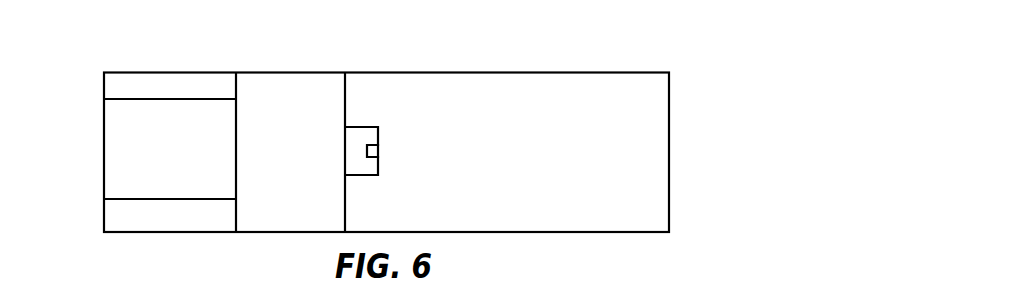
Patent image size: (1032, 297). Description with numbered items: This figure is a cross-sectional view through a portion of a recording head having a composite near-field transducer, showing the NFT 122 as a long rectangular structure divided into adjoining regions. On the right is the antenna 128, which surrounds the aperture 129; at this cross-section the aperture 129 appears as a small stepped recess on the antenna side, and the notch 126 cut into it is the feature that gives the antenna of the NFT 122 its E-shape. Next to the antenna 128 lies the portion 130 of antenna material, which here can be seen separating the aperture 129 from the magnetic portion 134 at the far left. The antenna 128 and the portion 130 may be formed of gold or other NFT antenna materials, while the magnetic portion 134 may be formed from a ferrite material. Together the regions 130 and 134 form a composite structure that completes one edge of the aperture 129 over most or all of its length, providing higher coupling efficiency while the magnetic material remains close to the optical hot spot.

The NFT 122 is at (627, 53).
The magnetic portion 134 is at (117, 156).
The antenna material portion 130 is at (314, 159).
The antenna 128 is at (548, 164).
The aperture 129 is at (361, 163).
The notch 126 is at (377, 146).